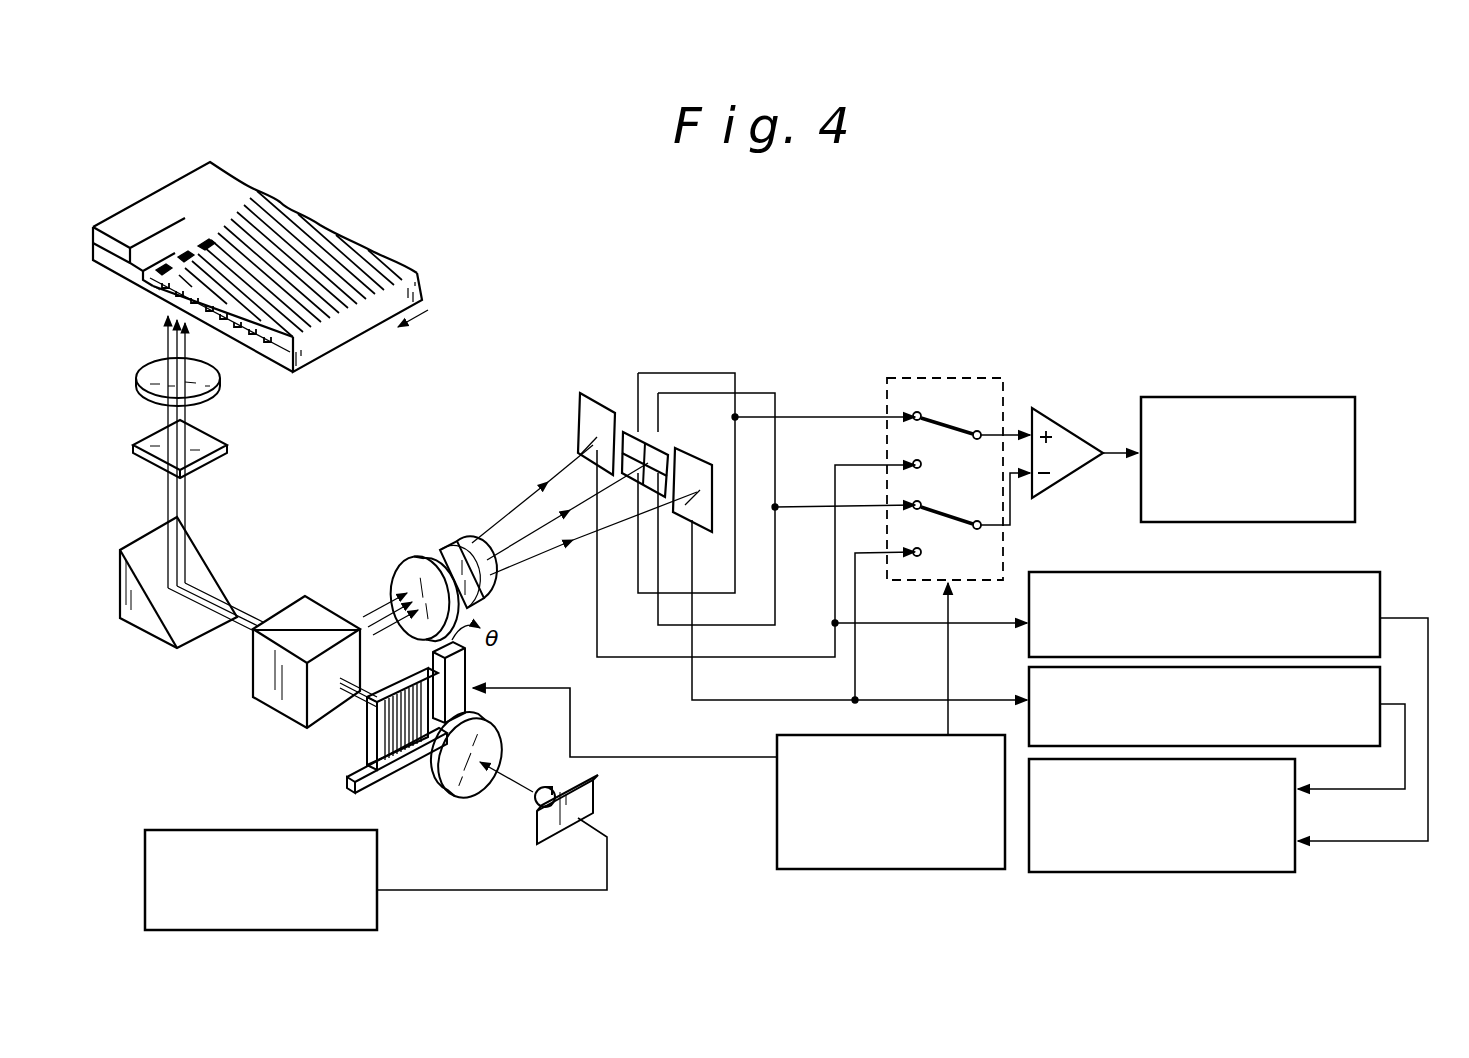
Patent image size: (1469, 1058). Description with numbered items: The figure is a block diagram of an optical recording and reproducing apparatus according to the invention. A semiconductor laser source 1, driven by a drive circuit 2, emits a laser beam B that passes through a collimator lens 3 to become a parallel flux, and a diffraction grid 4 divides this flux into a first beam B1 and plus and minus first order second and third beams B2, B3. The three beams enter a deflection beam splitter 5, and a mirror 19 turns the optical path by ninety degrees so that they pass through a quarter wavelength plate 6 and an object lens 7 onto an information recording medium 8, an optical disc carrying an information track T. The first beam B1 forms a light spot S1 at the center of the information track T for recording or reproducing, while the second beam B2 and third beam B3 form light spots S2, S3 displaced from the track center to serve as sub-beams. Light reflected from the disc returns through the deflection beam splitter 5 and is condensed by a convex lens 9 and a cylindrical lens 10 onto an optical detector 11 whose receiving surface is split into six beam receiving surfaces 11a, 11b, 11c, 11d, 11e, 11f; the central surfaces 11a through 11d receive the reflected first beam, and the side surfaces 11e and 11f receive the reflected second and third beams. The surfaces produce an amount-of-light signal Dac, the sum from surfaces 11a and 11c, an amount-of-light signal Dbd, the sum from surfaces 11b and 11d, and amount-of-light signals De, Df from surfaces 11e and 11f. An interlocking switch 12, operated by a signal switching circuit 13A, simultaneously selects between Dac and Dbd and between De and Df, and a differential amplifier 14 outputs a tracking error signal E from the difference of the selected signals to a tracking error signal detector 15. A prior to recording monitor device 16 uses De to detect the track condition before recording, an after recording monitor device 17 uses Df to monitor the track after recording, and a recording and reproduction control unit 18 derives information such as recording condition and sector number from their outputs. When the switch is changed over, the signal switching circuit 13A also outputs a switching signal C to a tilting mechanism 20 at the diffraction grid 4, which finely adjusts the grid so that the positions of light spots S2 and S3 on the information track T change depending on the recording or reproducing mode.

The semiconductor laser source 1 is at (600, 802).
The drive circuit 2 is at (237, 830).
The collimator lens 3 is at (478, 797).
The diffraction grid 4 is at (367, 740).
The deflection beam splitter 5 is at (253, 690).
The quarter wavelength plate 6 is at (227, 452).
The object lens 7 is at (136, 385).
The information recording medium 8 is at (345, 340).
The convex lens 9 is at (395, 575).
The cylindrical lens 10 is at (447, 550).
The optical detector 11 is at (772, 510).
The beam receiving surface 11a is at (627, 432).
The beam receiving surface 11b is at (685, 455).
The beam receiving surface 11c is at (625, 478).
The beam receiving surface 11d is at (657, 497).
The beam receiving surface 11e is at (592, 393).
The beam receiving surface 11f is at (700, 532).
The interlocking switch 12 is at (952, 378).
The signal switching circuit 13A is at (905, 869).
The differential amplifier 14 is at (1065, 425).
The tracking error signal detector 15 is at (1223, 397).
The prior to recording monitor device 16 is at (1162, 572).
The after recording monitor device 17 is at (1029, 678).
The recording and reproduction control unit 18 is at (1168, 872).
The mirror 19 is at (128, 620).
The tilting mechanism 20 is at (390, 790).
The light spot S1 is at (185, 253).
The light spot S2 is at (205, 242).
The light spot S3 is at (163, 268).
The information track T is at (153, 284).
The laser beam B is at (517, 775).
The first beam B1 is at (164, 329).
The second beam B2 is at (210, 348).
The third beam B3 is at (153, 347).
The switching signal C is at (712, 758).
The tracking error signal E is at (1113, 455).
The amount-of-light signal Dac is at (815, 415).
The amount-of-light signal Dbd is at (805, 505).
The amount-of-light signal De is at (803, 656).
The amount-of-light signal Df is at (740, 698).